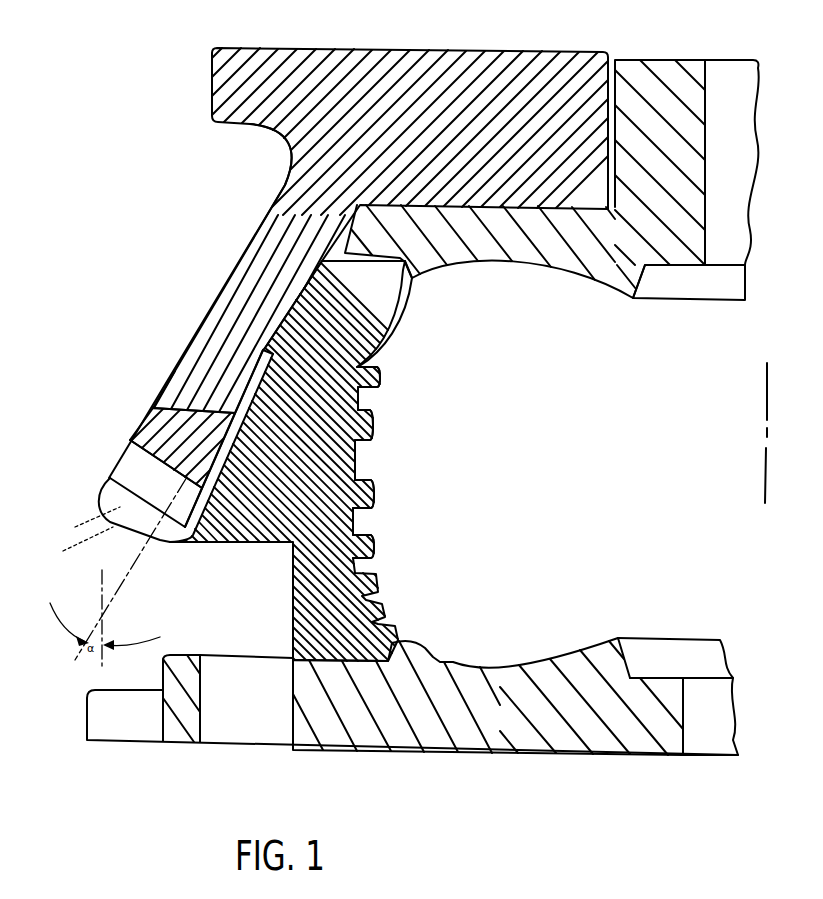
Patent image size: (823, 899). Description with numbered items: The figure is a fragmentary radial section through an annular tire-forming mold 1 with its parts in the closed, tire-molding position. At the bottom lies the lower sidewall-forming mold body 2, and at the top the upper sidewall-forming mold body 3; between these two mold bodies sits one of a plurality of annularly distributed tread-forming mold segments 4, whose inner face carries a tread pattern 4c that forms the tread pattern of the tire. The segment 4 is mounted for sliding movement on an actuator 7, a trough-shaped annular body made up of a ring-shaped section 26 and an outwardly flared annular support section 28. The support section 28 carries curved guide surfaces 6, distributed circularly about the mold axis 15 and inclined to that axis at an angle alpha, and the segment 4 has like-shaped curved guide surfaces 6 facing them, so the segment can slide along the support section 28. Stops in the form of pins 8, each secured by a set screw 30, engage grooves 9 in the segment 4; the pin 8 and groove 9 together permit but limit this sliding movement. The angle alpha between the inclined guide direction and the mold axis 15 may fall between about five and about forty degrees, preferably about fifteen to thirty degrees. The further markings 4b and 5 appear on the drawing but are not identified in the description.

The tire-forming mold 1 is at (146, 355).
The lower sidewall-forming mold body 2 is at (645, 742).
The upper sidewall-forming mold body 3 is at (583, 248).
The tread-forming mold segment 4 is at (350, 523).
The gripping tooth 4b is at (357, 456).
The pattern 4c is at (374, 418).
The lower flange 5 is at (515, 628).
The curved guide surface 6 is at (263, 348).
The actuator 7 is at (278, 139).
The pin 8 is at (157, 525).
The groove 9 is at (145, 402).
The mold axis 15 is at (765, 404).
The ring-shaped section 26 is at (526, 57).
The outwardly flared annular support section 28 is at (240, 262).
The set screw 30 is at (76, 538).